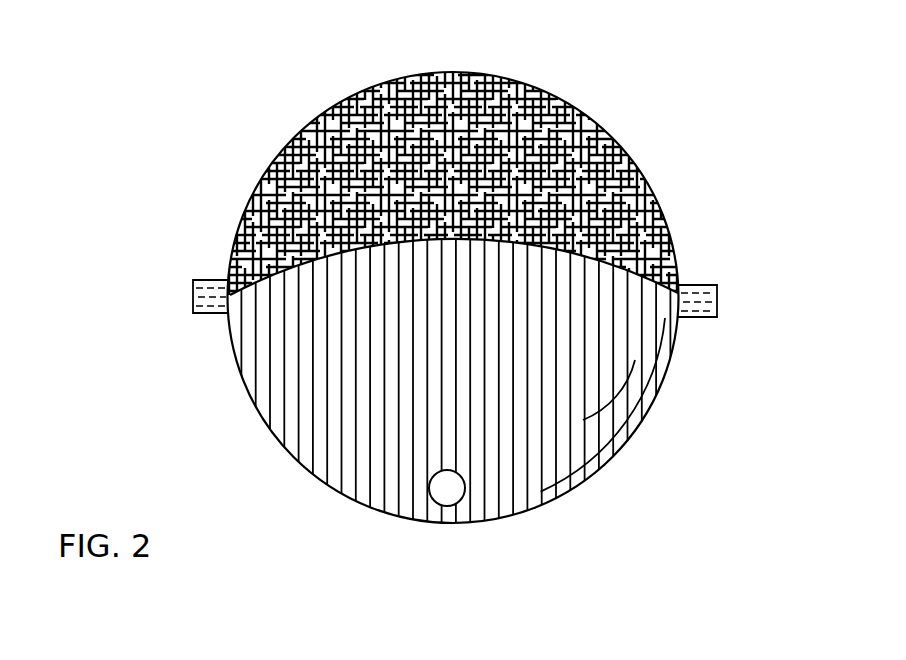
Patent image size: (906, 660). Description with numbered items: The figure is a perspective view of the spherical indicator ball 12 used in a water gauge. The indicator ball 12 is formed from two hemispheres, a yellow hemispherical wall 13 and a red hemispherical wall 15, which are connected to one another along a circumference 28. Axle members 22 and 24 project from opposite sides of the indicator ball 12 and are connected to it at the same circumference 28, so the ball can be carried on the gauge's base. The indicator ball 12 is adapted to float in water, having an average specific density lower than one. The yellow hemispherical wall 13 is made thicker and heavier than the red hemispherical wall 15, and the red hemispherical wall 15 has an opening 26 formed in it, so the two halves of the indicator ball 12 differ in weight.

The indicator ball 12 is at (648, 187).
The yellow hemispherical wall 13 is at (672, 237).
The red hemispherical wall 15 is at (632, 433).
The axle member 22 is at (193, 314).
The axle member 24 is at (692, 317).
The opening 26 is at (463, 502).
The circumference 28 is at (333, 258).